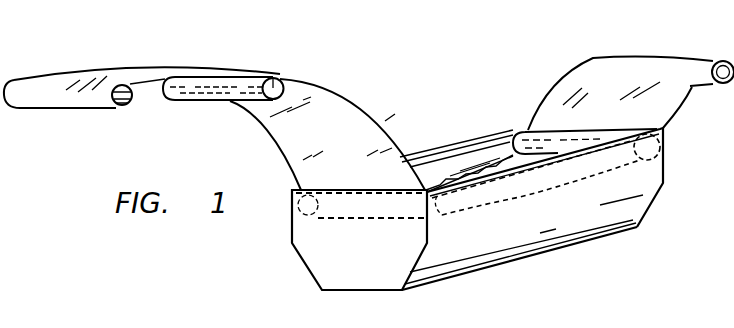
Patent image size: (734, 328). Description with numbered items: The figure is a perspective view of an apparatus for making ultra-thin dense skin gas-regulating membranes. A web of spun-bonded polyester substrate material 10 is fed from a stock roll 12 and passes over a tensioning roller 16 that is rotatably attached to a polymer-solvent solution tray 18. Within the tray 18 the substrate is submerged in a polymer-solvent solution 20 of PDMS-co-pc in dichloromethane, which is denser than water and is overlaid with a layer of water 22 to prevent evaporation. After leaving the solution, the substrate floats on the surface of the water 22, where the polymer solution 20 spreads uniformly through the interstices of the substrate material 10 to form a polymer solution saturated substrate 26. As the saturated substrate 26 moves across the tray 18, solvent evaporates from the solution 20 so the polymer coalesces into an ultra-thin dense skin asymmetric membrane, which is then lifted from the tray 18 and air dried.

The spun-bonded polyester substrate material 10 is at (142, 67).
The stock roll 12 is at (133, 103).
The tensioning roller 16 is at (275, 77).
The polymer-solvent solution tray 18 is at (661, 194).
The polymer-solvent solution 20 is at (490, 249).
The water 22 is at (436, 215).
The polymer solution saturated substrate 26 is at (515, 132).